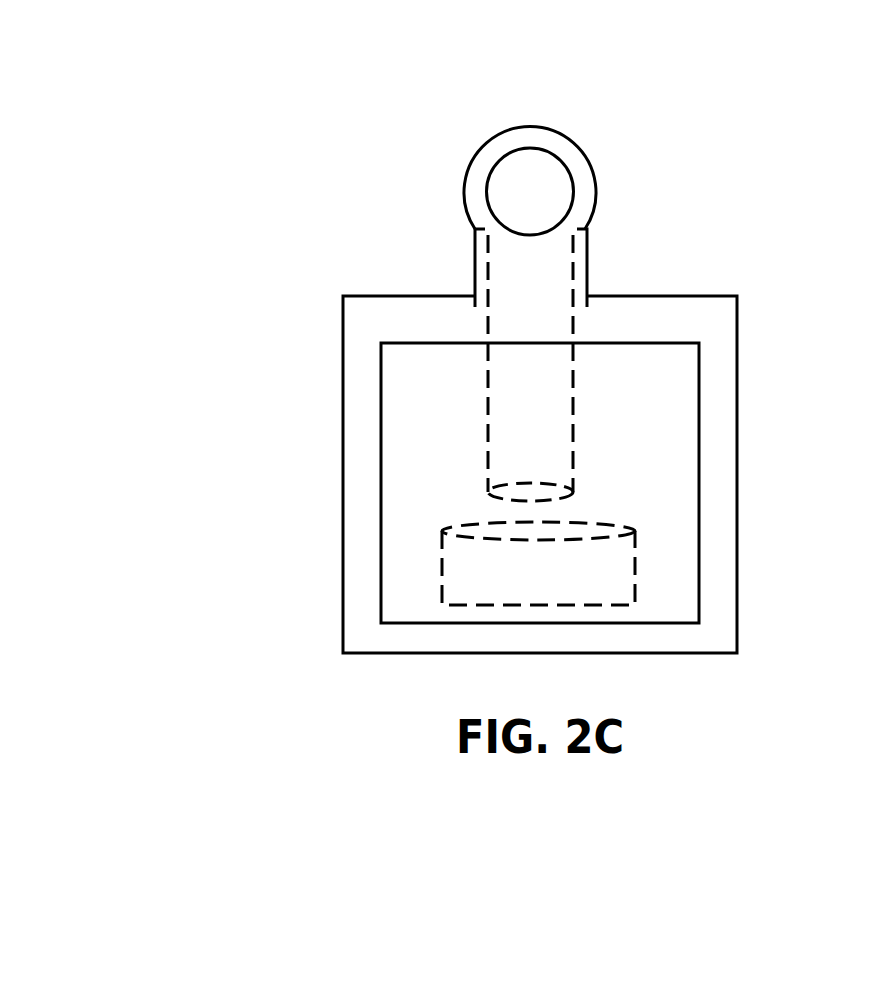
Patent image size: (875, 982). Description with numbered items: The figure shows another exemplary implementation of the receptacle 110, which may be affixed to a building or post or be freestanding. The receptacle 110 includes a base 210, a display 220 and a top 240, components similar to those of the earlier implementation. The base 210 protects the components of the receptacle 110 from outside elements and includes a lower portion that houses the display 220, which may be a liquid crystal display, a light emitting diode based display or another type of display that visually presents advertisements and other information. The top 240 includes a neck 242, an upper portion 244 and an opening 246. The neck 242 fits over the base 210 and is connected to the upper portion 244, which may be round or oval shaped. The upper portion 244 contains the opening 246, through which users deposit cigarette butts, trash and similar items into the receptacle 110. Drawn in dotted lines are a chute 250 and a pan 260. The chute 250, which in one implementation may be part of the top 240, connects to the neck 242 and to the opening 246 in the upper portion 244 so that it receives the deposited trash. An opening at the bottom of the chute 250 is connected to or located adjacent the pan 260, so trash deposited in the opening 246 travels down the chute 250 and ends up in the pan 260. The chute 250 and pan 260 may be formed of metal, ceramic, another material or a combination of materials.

The receptacle 110 is at (378, 110).
The base 210 is at (737, 360).
The display 220 is at (671, 568).
The top 240 is at (467, 152).
The neck 242 is at (588, 253).
The upper portion 244 is at (593, 168).
The opening 246 is at (528, 175).
The chute 250 is at (495, 435).
The pan 260 is at (447, 567).